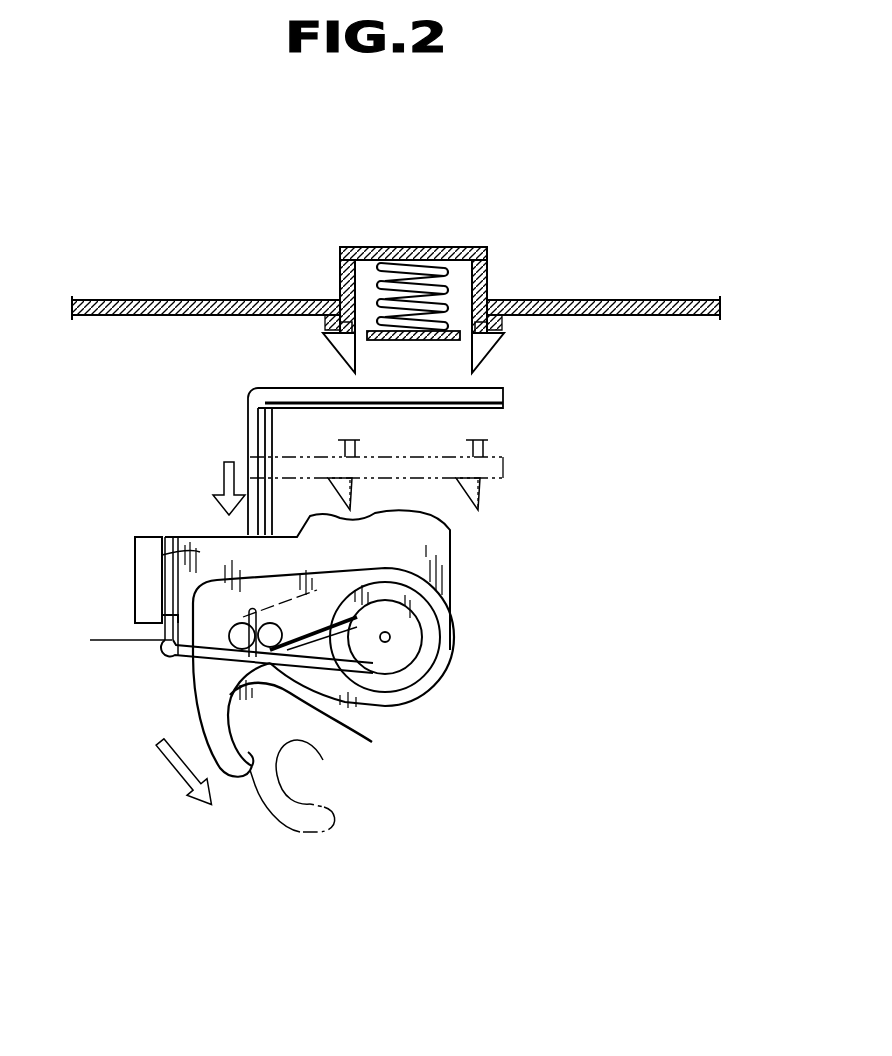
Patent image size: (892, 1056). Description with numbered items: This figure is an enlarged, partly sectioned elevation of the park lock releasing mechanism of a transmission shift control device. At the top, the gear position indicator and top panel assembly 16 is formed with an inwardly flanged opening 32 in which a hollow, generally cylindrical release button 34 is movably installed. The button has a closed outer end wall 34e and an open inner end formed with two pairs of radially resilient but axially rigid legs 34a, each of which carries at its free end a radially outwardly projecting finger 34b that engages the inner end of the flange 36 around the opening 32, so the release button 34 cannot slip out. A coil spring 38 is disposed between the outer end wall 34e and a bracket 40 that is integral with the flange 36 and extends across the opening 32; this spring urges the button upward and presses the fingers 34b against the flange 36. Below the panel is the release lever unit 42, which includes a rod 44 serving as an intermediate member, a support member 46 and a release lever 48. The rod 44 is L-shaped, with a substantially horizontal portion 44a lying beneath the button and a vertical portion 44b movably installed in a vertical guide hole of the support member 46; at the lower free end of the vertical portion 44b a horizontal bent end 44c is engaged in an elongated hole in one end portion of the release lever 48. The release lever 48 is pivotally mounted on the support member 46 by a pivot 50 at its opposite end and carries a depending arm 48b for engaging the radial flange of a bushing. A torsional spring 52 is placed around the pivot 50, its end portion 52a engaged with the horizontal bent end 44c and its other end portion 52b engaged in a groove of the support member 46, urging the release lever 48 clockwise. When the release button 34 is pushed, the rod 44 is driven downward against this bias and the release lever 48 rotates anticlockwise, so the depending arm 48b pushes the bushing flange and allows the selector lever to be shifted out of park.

The gear position indicator and top panel assembly 16 is at (180, 298).
The inwardly flanged opening 32 is at (487, 296).
The release button 34 is at (440, 277).
The legs 34a is at (340, 288).
The fingers 34b is at (492, 345).
The outer end wall 34e is at (445, 247).
The flange 36 is at (500, 322).
The coil spring 38 is at (390, 247).
The bracket 40 is at (415, 341).
The release lever unit 42 is at (497, 642).
The rod 44 is at (373, 552).
The horizontal portion 44a is at (288, 396).
The vertical portion 44b is at (248, 436).
The horizontal bent end 44c is at (340, 722).
The support member 46 is at (135, 568).
The release lever 48 is at (193, 740).
The depending arm 48b is at (252, 780).
The pivot 50 is at (392, 642).
The torsional spring 52 is at (201, 654).
The end portion 52a is at (101, 641).
The other end portion 52b is at (162, 555).